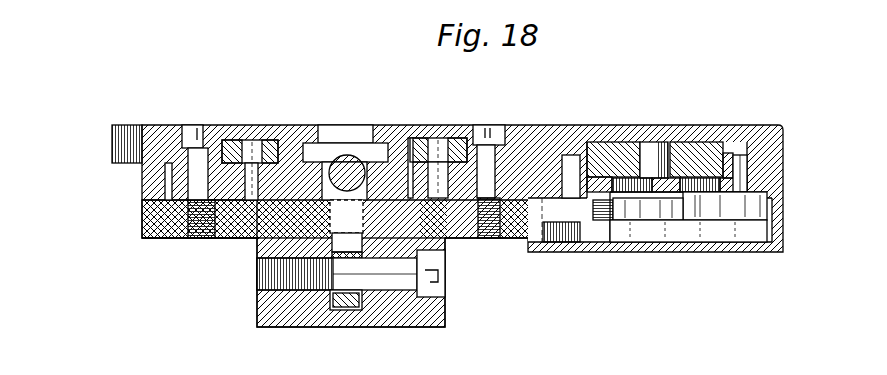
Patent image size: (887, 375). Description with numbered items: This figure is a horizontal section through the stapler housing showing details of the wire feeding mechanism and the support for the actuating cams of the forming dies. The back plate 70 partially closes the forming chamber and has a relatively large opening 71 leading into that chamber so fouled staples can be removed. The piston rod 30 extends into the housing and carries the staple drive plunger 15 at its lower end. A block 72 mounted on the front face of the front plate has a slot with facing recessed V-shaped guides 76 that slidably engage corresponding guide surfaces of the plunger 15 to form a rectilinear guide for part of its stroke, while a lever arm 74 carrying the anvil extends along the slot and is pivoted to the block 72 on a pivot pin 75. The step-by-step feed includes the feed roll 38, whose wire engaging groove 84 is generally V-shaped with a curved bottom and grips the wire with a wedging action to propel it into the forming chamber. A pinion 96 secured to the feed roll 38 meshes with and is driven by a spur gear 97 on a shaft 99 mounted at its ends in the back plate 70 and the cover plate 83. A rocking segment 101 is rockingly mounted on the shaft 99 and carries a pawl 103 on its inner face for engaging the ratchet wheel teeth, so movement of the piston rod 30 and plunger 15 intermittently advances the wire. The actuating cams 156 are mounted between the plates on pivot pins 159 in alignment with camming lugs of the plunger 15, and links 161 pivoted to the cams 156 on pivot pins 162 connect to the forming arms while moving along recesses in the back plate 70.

The staple drive plunger 15 is at (293, 238).
The piston rod 30 is at (337, 162).
The feed roll 38 is at (607, 213).
The back plate 70 is at (296, 98).
The opening 71 is at (228, 240).
The block 72 is at (307, 327).
The lever arm 74 is at (347, 303).
The pivot pin 75 is at (437, 262).
The V-shaped guides 76 is at (372, 218).
The cover plate 83 is at (697, 253).
The wire engaging groove 84 is at (597, 208).
The pinion 96 is at (672, 178).
The spur gear 97 is at (743, 168).
The shaft 99 is at (642, 138).
The rocking segment 101 is at (660, 228).
The pawl 103 is at (743, 205).
The actuating cams 156 is at (168, 170).
The pivot pins 159 is at (188, 132).
The links 161 is at (233, 142).
The pivot pins 162 is at (253, 145).